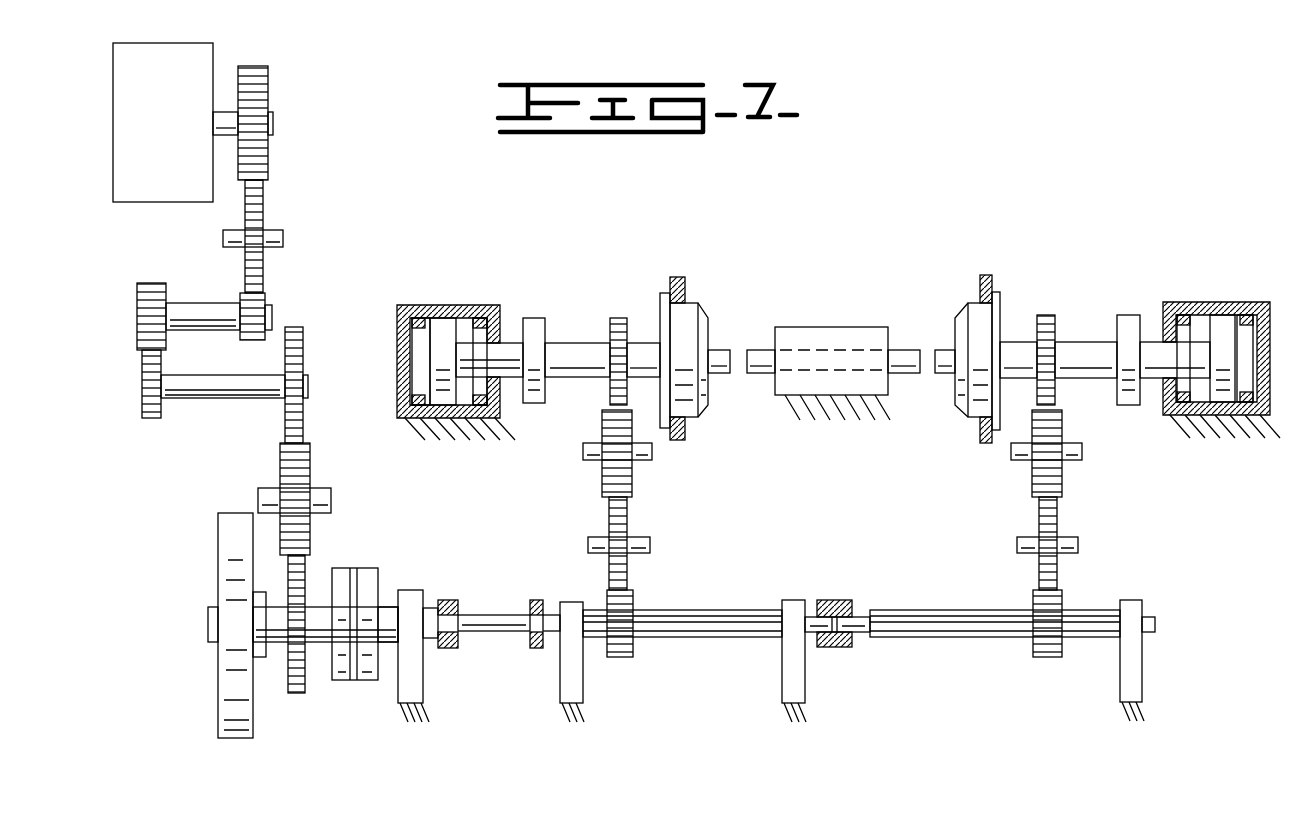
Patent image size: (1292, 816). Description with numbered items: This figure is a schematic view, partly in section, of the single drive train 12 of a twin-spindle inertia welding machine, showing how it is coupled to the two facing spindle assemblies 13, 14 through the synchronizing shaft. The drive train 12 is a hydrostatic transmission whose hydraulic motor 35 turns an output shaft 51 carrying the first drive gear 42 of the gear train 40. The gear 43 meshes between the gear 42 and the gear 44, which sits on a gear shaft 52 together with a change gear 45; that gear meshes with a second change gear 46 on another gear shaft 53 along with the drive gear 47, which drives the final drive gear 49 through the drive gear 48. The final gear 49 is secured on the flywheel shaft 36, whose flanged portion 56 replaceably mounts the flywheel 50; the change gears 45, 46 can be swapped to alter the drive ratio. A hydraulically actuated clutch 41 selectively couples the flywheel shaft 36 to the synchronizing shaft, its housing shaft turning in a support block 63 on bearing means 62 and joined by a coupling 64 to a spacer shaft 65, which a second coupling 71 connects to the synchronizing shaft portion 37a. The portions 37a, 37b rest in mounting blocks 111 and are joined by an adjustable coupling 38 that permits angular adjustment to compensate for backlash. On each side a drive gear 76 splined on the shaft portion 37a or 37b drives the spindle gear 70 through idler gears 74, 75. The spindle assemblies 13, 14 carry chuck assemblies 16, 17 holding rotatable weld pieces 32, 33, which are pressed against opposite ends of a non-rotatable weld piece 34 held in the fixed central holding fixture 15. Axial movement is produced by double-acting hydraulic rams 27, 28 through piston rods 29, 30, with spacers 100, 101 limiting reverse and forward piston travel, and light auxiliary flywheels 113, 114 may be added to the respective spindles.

The hydraulic motor 35 is at (152, 45).
The output shaft 51 is at (228, 117).
The first drive gear 42 is at (263, 78).
The gear train 40 is at (275, 180).
The gear 43 is at (258, 204).
The single drive train 12 is at (305, 266).
The change gear 45 is at (143, 307).
The gear shaft 52 is at (216, 316).
The gear 44 is at (267, 302).
The change gear 46 is at (148, 380).
The gear shaft 53 is at (222, 385).
The drive gear 47 is at (300, 354).
The drive gear 48 is at (300, 478).
The flywheel 50 is at (226, 528).
The flywheel shaft 36 is at (213, 612).
The flanged portion 56 is at (260, 658).
The final drive gear 49 is at (300, 678).
The hydraulically actuated clutch 41 is at (351, 567).
The bearing means 62 is at (388, 613).
The support block 63 is at (413, 668).
The coupling 64 is at (447, 605).
The spacer shaft 65 is at (512, 626).
The second coupling 71 is at (536, 605).
The mounting blocks 111 is at (568, 679).
The synchronizing shaft portion 37a is at (648, 620).
The drive gear 76 is at (620, 660).
The adjustable coupling 38 is at (833, 602).
The synchronizing shaft portion 37b is at (910, 622).
The idler gear 74 is at (632, 470).
The idler gear 75 is at (630, 516).
The double-acting hydraulic ram 27 is at (441, 302).
The spacer 100 is at (418, 318).
The spacer 101 is at (483, 318).
The piston rod 29 is at (508, 345).
The spindle gear 70 is at (615, 317).
The auxiliary flywheel 113 is at (672, 292).
The spindle assembly 13 is at (690, 283).
The chuck assembly 16 is at (688, 312).
The weld piece 32 is at (718, 352).
The central holding fixture 15 is at (816, 323).
The non-rotatable weld piece 34 is at (896, 352).
The weld piece 33 is at (945, 365).
The chuck assembly 17 is at (962, 318).
The spindle assembly 14 is at (958, 285).
The auxiliary flywheel 114 is at (986, 278).
The piston rod 30 is at (1148, 348).
The double-acting hydraulic ram 28 is at (1196, 298).